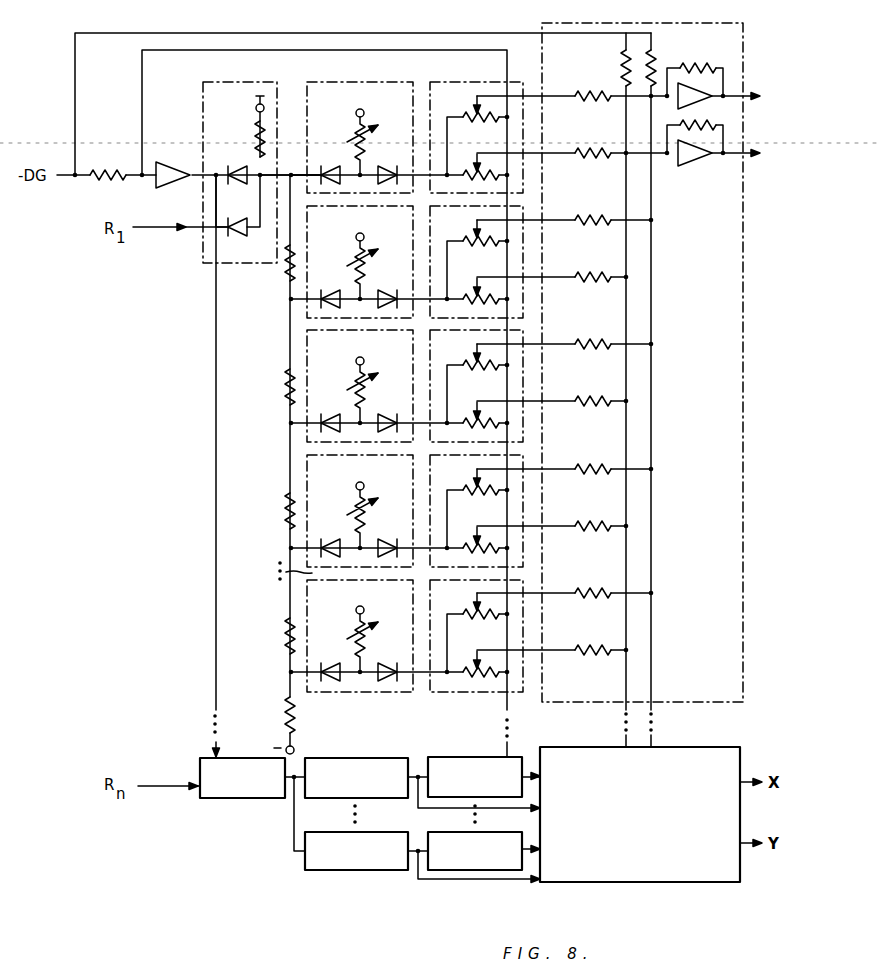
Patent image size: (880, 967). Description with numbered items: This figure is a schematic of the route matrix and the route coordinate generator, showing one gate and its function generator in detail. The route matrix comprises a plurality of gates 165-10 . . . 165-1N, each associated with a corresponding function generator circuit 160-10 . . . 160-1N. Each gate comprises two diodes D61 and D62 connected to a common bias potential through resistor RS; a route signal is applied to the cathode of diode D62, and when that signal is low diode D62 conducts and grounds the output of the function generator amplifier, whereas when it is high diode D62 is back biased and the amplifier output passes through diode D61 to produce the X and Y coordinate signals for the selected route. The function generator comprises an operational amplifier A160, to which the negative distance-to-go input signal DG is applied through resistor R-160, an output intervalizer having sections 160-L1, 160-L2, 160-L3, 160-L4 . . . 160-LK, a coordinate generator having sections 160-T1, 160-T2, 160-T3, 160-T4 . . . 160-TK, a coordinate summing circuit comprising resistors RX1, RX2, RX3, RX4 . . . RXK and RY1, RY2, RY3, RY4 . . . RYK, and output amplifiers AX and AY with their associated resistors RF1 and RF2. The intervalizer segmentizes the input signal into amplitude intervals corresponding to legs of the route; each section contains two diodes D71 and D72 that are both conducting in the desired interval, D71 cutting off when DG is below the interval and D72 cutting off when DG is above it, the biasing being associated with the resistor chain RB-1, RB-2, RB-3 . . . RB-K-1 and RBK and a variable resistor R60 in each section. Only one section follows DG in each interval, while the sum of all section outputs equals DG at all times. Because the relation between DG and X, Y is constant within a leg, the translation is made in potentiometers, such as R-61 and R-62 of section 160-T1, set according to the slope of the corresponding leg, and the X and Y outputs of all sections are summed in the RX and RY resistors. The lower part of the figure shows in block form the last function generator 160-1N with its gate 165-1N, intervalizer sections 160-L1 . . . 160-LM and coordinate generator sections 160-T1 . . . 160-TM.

The input resistor R-160 is at (100, 167).
The operational amplifier A160 is at (173, 165).
The gate 165-10 is at (203, 263).
The resistor RS is at (256, 135).
The diode D61 is at (243, 166).
The diode D62 is at (238, 237).
The output intervalizer section 160-L1 is at (313, 82).
The output intervalizer section 160-L2 is at (368, 262).
The output intervalizer section 160-L3 is at (368, 386).
The output intervalizer section 160-L4 is at (368, 511).
The output intervalizer section 160-LK is at (368, 636).
The limiter circuit 160-LM is at (400, 872).
The coordinate generator section 160-T1 is at (493, 80).
The coordinate generator section 160-T2 is at (476, 259).
The coordinate generator section 160-T3 is at (476, 383).
The coordinate generator section 160-T4 is at (476, 508).
The coordinate generator section 160-TK is at (476, 633).
The translator circuit 160-TM is at (518, 873).
The diode D71 is at (331, 161).
The diode D72 is at (385, 161).
The variable resistor R60 is at (359, 90).
The potentiometer R-61 is at (460, 128).
The potentiometer R-62 is at (452, 180).
The summing resistor RX1 is at (590, 98).
The summing resistor RX2 is at (590, 232).
The summing resistor RX3 is at (590, 356).
The summing resistor RX4 is at (590, 481).
The summing resistor RXK is at (590, 605).
The summing resistor RY1 is at (590, 161).
The summing resistor RY2 is at (590, 284).
The summing resistor RY3 is at (590, 408).
The summing resistor RY4 is at (590, 533).
The summing resistor RYK is at (590, 657).
The feedback resistor RF1 is at (620, 73).
The feedback resistor RF2 is at (655, 64).
The output amplifier AX is at (697, 106).
The output amplifier AY is at (692, 164).
The bias resistor RB-1 is at (284, 272).
The bias resistor RB-2 is at (285, 386).
The bias resistor RB-3 is at (285, 509).
The bias resistor RB-K-1 is at (286, 630).
The bias resistor RBK is at (284, 722).
The summing matrix unit 160-10 is at (657, 705).
The gate 165-1N is at (200, 798).
The summing matrix unit 160-1N is at (715, 882).